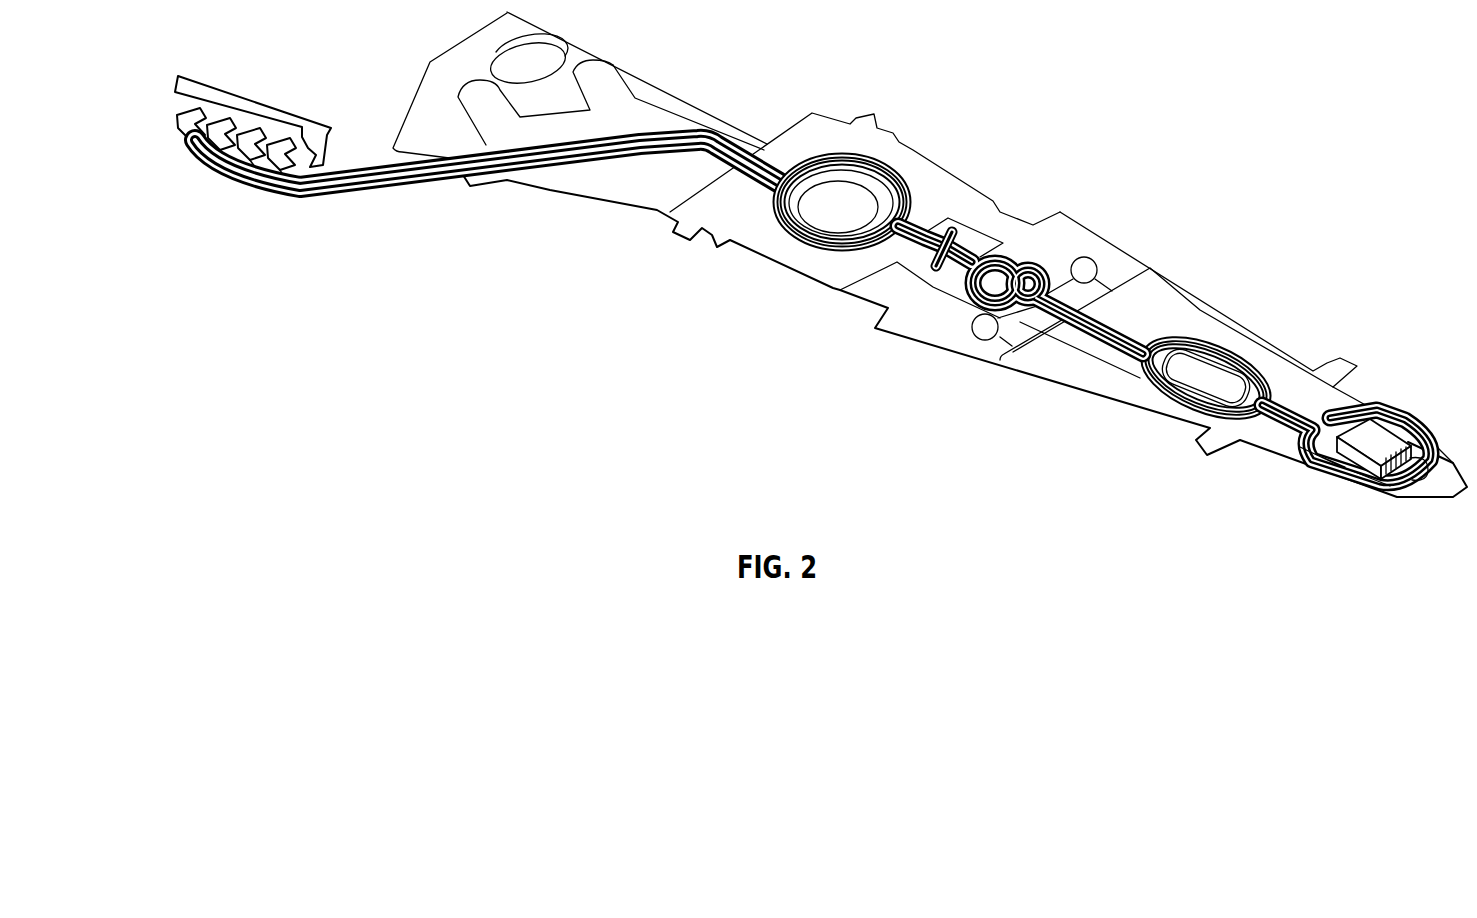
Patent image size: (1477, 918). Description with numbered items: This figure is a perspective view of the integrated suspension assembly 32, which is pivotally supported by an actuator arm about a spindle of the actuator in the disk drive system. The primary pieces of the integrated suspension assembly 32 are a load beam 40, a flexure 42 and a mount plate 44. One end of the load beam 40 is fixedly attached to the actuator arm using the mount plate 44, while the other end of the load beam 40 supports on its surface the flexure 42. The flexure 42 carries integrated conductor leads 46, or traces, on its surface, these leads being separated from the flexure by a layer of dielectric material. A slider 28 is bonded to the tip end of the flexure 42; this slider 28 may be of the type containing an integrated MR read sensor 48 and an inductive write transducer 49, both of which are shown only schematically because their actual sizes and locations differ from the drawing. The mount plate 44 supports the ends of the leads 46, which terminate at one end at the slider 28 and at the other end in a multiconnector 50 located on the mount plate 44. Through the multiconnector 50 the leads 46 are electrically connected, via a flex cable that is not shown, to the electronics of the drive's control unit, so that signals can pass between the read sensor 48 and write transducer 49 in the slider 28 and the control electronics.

The integrated suspension assembly 32 is at (1171, 170).
The multiconnector 50 is at (222, 95).
The mount plate 44 is at (932, 190).
The load beam 40 is at (922, 310).
The flexure 42 is at (1143, 300).
The conductor leads 46 is at (1152, 335).
The slider 28 is at (1372, 437).
The inductive write transducer 49 is at (1405, 430).
The MR read sensor 48 is at (1352, 480).